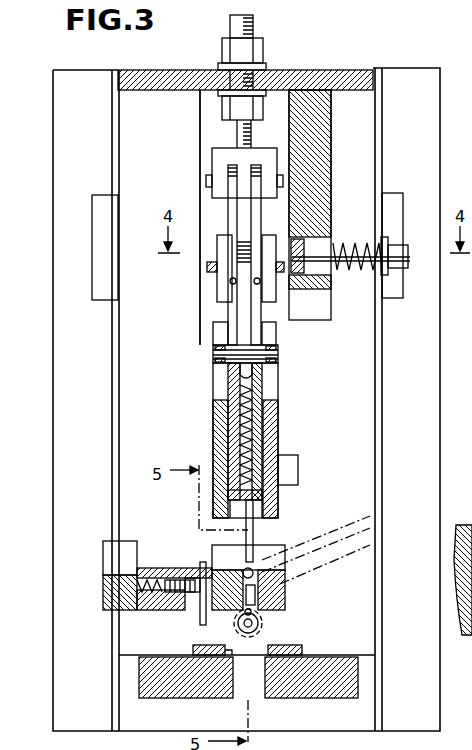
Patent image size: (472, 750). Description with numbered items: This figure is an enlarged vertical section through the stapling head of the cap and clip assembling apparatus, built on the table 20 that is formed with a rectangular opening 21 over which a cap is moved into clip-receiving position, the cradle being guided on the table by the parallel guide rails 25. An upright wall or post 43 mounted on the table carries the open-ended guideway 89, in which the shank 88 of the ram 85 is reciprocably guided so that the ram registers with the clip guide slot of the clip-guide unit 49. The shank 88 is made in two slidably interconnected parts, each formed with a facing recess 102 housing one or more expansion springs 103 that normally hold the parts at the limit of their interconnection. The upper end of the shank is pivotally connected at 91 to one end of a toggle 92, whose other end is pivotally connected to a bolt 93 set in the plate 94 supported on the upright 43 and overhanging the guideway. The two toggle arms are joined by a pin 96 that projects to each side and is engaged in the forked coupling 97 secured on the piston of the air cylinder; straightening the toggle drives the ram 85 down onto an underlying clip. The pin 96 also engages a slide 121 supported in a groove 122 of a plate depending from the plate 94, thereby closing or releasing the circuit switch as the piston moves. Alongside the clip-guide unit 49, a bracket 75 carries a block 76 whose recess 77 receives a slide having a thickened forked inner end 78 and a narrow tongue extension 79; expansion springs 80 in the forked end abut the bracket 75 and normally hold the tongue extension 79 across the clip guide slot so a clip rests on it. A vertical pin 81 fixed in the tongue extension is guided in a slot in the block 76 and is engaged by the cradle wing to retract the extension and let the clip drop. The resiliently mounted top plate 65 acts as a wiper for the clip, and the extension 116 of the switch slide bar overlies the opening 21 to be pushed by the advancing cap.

The table 20 is at (333, 656).
The rectangular opening 21 is at (233, 685).
The guide rails 25 is at (274, 646).
The upright wall or post 43 is at (126, 332).
The clip-guide unit 49 is at (290, 595).
The top plate 65 is at (206, 558).
The bracket 75 is at (103, 585).
The block 76 is at (163, 611).
The recess 77 is at (128, 611).
The forked inner end 78 is at (190, 578).
The tongue extension 79 is at (242, 614).
The expansion springs 80 is at (149, 579).
The pin 81 is at (202, 613).
The ram 85 is at (256, 527).
The shank 88 is at (266, 444).
The guideway 89 is at (264, 425).
The pivotal connection 91 is at (216, 352).
The toggle 92 is at (240, 314).
The bolt 93 is at (234, 128).
The plate 94 is at (337, 68).
The pin 96 is at (208, 267).
The forked coupling 97 is at (226, 297).
The recess 102 is at (236, 450).
The expansion springs 103 is at (218, 418).
The slide bar extension 116 is at (263, 622).
The slide 121 is at (300, 240).
The groove 122 is at (298, 270).